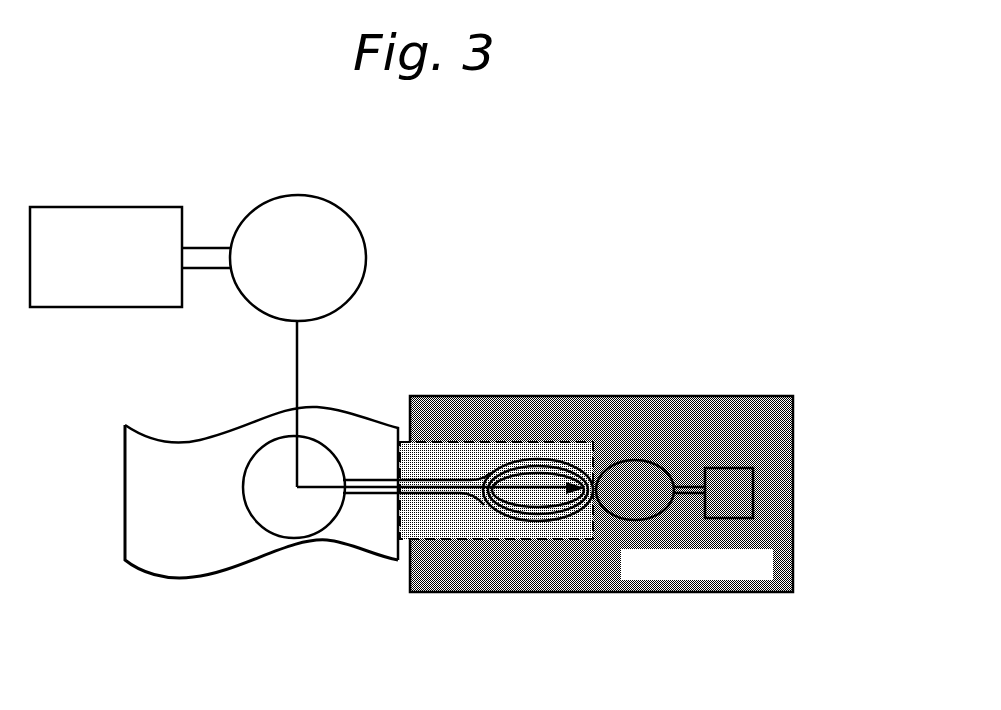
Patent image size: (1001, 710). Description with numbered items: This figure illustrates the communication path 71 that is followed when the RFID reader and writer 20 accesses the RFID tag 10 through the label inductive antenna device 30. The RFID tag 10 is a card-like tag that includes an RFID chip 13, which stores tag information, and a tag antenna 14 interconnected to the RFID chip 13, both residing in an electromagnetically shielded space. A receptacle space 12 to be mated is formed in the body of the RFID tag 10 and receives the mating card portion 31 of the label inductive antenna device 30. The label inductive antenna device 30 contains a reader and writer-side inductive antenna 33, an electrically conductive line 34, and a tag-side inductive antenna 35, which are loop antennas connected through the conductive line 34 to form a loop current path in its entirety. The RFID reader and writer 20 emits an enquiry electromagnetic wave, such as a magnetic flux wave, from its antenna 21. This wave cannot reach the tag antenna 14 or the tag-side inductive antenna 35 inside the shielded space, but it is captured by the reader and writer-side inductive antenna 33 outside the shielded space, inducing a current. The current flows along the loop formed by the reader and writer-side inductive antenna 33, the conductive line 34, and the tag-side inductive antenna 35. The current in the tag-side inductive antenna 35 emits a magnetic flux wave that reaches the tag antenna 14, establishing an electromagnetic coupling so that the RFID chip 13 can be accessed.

The RFID tag 10 is at (692, 605).
The receptacle space to be mated 12 is at (563, 540).
The RFID chip 13 is at (754, 490).
The tag antenna 14 is at (633, 460).
The RFID reader and writer 20 is at (108, 207).
The antenna 21 is at (300, 195).
The label inductive antenna device 30 is at (207, 596).
The mating card portion 31 is at (503, 540).
The reader and writer-side inductive antenna 33 is at (263, 445).
The electrically conductive line 34 is at (451, 480).
The tag-side inductive antenna 35 is at (541, 462).
The communication path 71 is at (298, 358).